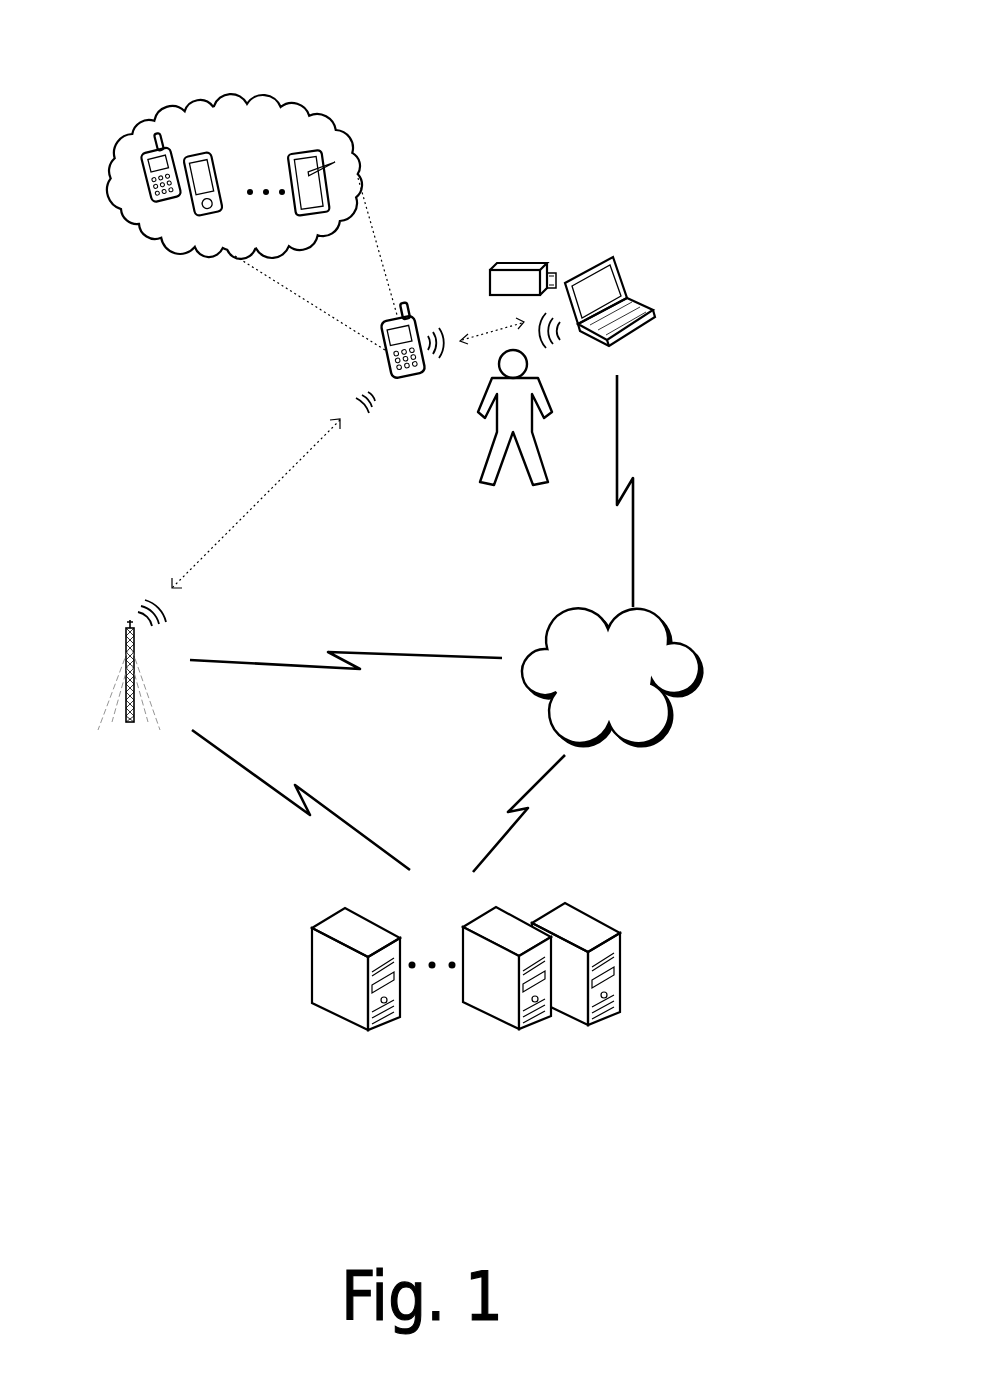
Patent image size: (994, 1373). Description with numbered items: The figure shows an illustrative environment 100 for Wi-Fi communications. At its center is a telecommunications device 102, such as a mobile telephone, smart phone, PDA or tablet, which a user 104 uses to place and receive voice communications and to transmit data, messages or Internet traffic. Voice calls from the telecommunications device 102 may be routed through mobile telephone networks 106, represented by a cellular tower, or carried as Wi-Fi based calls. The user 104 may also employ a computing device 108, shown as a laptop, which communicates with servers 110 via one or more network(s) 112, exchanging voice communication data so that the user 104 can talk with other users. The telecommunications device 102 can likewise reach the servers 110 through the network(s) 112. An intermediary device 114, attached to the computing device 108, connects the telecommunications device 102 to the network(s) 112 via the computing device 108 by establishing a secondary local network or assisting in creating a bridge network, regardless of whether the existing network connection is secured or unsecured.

The environment 100 is at (745, 58).
The telecommunications device 102 is at (413, 277).
The user 104 is at (473, 483).
The mobile telephone networks 106 is at (112, 597).
The computing device 108 is at (645, 278).
The servers 110 is at (313, 888).
The network(s) 112 is at (662, 613).
The intermediary device 114 is at (538, 258).